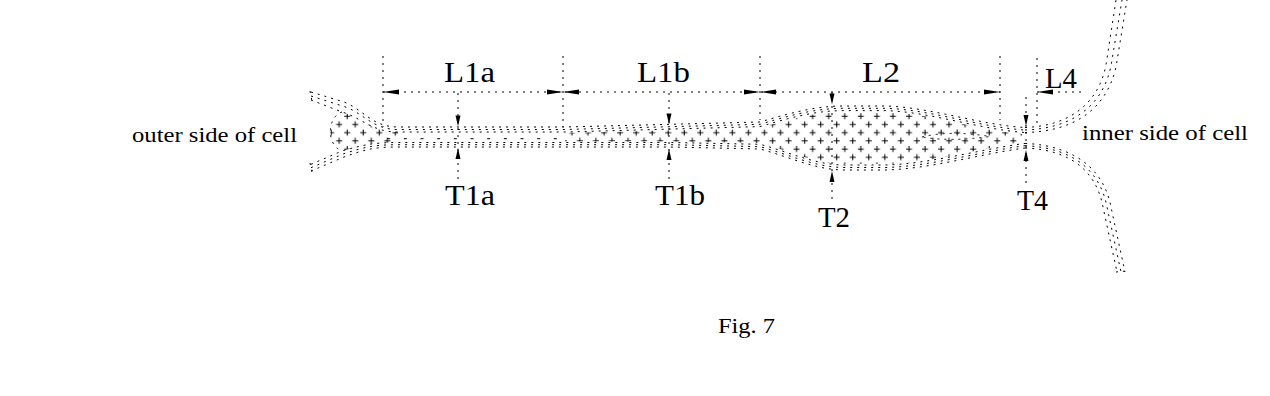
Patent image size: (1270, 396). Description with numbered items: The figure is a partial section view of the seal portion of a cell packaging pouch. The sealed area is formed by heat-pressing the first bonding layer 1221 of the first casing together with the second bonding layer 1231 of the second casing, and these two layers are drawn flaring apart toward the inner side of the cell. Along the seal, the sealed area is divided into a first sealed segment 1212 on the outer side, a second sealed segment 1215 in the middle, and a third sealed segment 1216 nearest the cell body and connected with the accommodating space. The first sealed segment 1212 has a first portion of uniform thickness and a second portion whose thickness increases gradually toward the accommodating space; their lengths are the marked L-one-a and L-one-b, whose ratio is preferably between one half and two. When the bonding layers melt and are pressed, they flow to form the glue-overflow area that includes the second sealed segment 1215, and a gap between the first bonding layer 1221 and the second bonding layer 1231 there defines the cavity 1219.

The first sealed segment 1212 is at (600, 132).
The second sealed segment 1215 is at (805, 135).
The third sealed segment 1216 is at (1028, 141).
The cavity 1219 is at (940, 133).
The first bonding layer 1221 is at (1080, 118).
The second bonding layer 1231 is at (1105, 186).